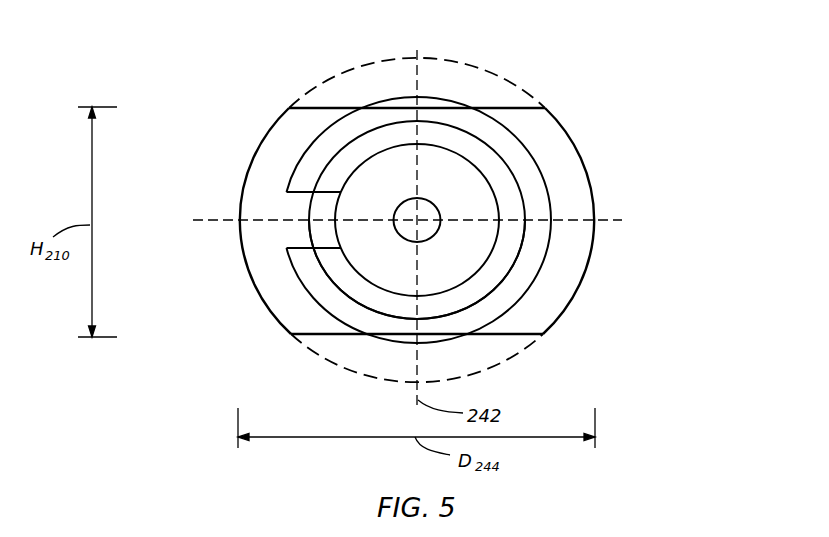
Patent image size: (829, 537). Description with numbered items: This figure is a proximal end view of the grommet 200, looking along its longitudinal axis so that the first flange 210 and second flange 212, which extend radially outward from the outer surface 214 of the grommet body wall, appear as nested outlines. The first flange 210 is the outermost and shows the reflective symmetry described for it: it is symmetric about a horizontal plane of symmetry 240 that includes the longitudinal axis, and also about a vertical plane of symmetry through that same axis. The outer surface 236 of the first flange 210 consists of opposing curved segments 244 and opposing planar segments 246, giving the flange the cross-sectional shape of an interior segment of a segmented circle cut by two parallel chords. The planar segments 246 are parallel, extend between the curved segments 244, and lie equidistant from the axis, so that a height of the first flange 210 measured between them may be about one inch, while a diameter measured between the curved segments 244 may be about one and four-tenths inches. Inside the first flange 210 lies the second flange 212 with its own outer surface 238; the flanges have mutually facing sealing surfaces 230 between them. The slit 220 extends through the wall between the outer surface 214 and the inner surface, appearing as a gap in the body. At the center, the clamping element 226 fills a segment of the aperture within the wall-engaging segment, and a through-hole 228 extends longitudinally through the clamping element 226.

The grommet 200 is at (622, 60).
The first flange 210 is at (283, 130).
The second flange 212 is at (402, 110).
The outer surface 214 is at (424, 124).
The slit 220 is at (266, 200).
The clamping element 226 is at (367, 206).
The through-hole 228 is at (424, 215).
The sealing surfaces 230 is at (556, 291).
The outer surface of the first flange 236 is at (532, 337).
The outer surface of the second flange 238 is at (410, 320).
The horizontal plane of symmetry 240 is at (615, 220).
The curved segments 244 is at (585, 162).
The planar segments 246 is at (512, 107).